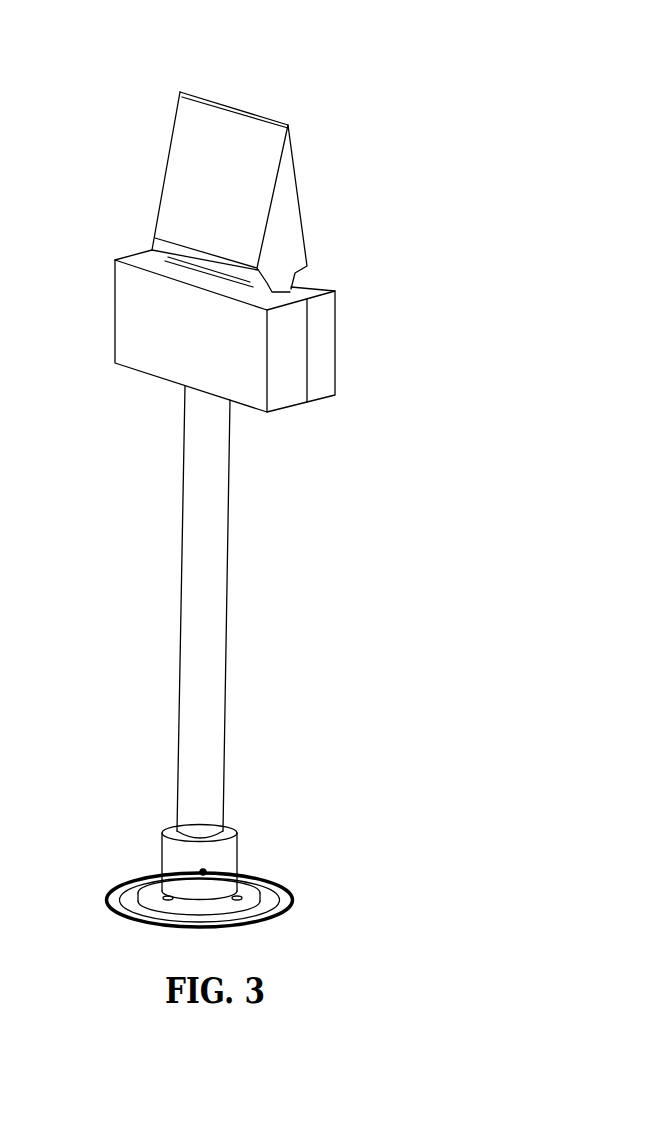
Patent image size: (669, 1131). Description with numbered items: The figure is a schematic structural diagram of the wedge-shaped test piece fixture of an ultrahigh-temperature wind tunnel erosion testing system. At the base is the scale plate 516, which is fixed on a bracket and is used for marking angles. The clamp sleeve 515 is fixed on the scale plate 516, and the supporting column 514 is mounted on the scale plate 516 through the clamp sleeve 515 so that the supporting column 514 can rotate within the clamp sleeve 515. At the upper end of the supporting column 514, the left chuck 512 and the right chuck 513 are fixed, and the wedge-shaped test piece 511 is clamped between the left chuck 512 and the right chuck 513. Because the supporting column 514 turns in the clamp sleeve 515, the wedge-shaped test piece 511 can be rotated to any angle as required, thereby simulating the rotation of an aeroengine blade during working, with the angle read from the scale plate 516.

The wedge-shaped test piece 511 is at (247, 142).
The left chuck 512 is at (137, 338).
The right chuck 513 is at (320, 367).
The supporting column 514 is at (205, 765).
The clamp sleeve 515 is at (218, 870).
The scale plate 516 is at (290, 898).